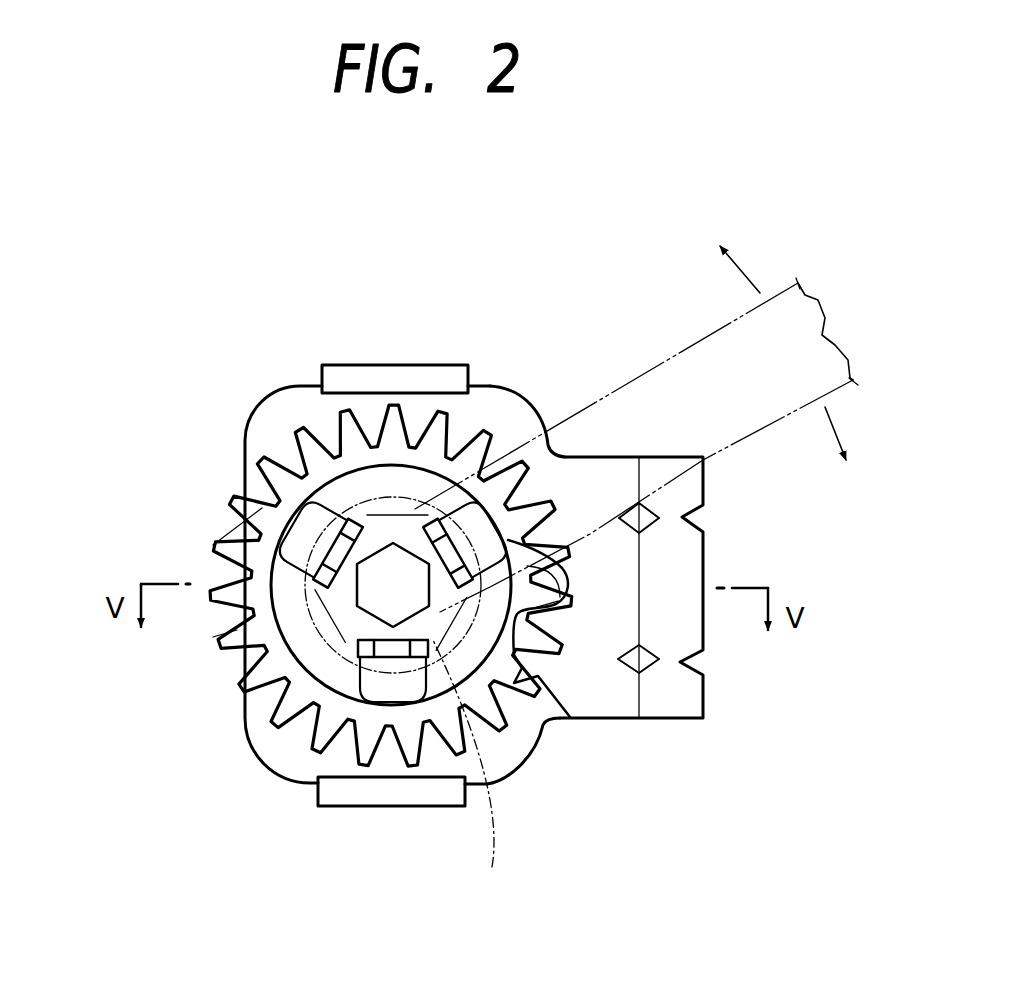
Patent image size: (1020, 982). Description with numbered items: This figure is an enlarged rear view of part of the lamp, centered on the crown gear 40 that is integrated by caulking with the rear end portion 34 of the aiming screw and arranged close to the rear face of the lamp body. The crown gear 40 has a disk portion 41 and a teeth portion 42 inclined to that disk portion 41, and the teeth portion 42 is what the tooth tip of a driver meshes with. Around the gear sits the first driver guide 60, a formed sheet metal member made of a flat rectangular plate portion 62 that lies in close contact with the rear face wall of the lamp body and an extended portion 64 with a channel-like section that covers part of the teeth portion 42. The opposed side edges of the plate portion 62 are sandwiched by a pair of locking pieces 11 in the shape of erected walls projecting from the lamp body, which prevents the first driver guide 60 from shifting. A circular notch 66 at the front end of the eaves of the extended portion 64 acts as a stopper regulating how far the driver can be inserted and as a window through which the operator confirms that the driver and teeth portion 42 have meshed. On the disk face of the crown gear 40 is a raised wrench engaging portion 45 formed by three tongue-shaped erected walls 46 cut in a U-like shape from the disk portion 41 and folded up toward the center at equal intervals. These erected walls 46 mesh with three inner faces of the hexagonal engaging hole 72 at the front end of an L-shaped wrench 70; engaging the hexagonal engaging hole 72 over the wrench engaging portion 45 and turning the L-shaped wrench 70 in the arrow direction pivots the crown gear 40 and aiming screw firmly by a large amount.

The locking piece 11 is at (430, 375).
The rear end portion of the aiming screw 34 is at (345, 607).
The crown gear 40 is at (230, 497).
The disk portion 41 is at (355, 598).
The teeth portion 42 is at (213, 545).
The wrench engaging portion 45 is at (398, 510).
The erected wall 46 is at (318, 528).
The first driver guide 60 is at (533, 398).
The plate portion 62 is at (268, 403).
The extended portion 64 is at (610, 473).
The notch 66 is at (540, 720).
The L-shaped wrench 70 is at (746, 444).
The hexagonal engaging hole 72 is at (470, 769).